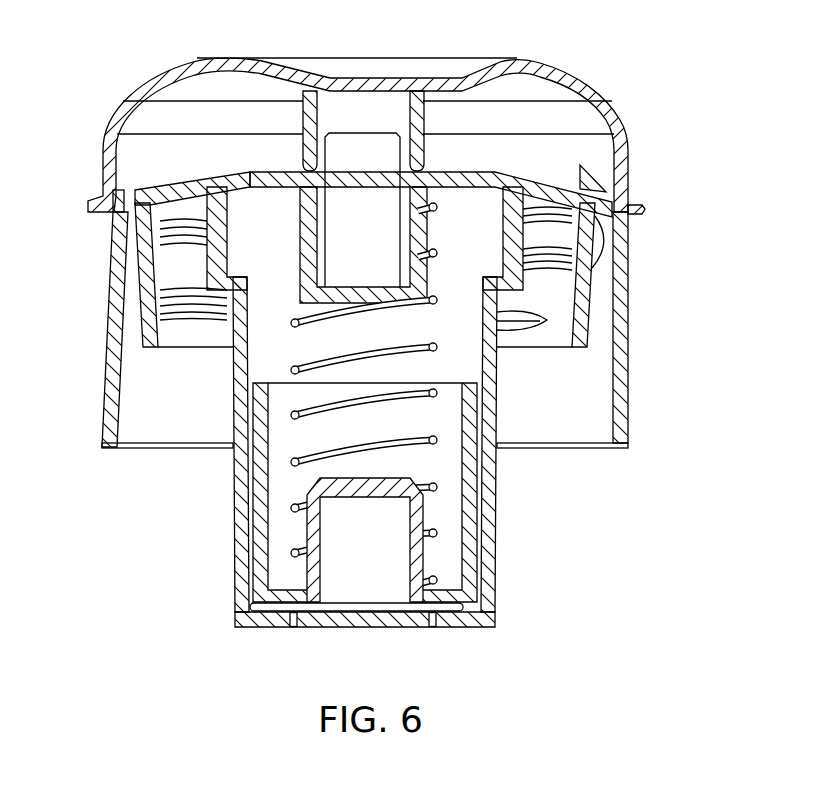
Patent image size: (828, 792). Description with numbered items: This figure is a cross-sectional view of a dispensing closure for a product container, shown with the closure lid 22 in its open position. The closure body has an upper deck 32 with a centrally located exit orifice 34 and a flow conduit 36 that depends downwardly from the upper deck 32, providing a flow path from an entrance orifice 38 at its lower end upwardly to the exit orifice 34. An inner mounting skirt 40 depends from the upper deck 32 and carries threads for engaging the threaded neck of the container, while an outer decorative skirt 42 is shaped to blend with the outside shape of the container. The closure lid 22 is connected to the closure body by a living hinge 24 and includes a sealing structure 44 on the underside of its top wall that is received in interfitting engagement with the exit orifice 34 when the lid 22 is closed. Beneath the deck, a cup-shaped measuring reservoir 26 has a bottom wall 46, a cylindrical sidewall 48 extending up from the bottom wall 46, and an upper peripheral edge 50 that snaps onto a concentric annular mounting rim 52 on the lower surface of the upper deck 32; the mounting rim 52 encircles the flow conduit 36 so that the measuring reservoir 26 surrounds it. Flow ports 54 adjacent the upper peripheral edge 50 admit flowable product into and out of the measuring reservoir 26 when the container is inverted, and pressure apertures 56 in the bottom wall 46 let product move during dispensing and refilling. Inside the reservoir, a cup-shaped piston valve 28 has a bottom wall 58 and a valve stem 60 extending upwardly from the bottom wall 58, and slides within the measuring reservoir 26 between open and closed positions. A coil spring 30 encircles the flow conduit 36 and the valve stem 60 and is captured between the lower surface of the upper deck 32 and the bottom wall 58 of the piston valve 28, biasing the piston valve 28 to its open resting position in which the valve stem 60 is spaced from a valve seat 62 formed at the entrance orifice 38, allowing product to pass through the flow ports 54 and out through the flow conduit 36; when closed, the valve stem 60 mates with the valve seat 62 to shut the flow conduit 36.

The closure lid 22 is at (604, 98).
The living hinge 24 is at (643, 210).
The measuring reservoir 26 is at (226, 390).
The piston valve 28 is at (248, 520).
The spring 30 is at (235, 448).
The upper deck 32 is at (493, 173).
The exit orifice 34 is at (355, 197).
The flow conduit 36 is at (306, 190).
The entrance orifice 38 is at (293, 270).
The inner mounting skirt 40 is at (578, 282).
The outer decorative skirt 42 is at (630, 368).
The sealing structure 44 is at (414, 168).
The bottom wall 46 is at (480, 628).
The cylindrical sidewall 48 is at (492, 508).
The upper peripheral edge 50 is at (215, 222).
The mounting rim 52 is at (243, 208).
The flow ports 54 is at (230, 262).
The pressure apertures 56 is at (293, 628).
The bottom wall 58 is at (262, 605).
The valve stem 60 is at (418, 520).
The valve seat 62 is at (413, 305).